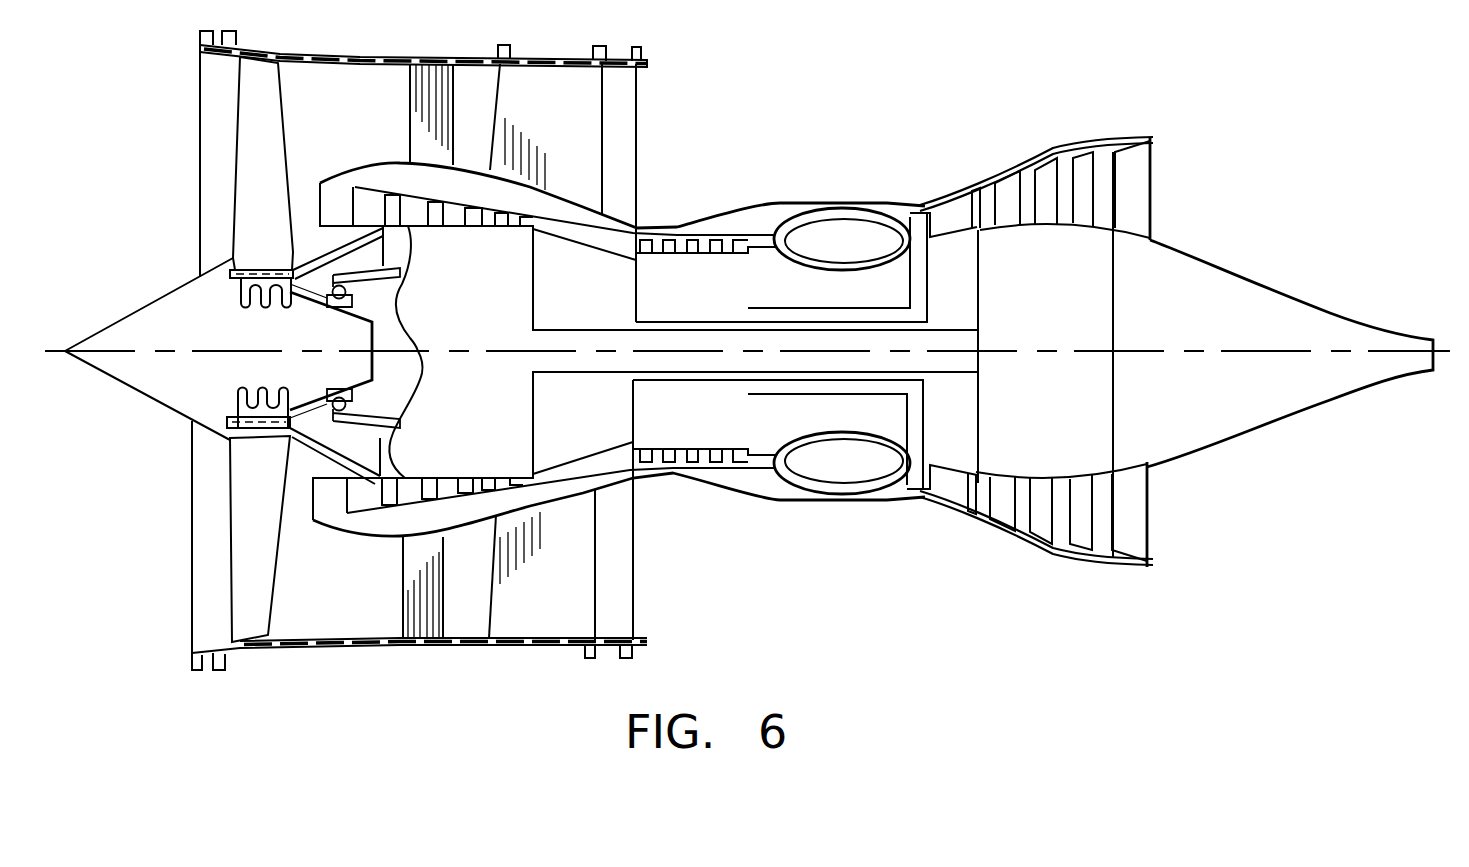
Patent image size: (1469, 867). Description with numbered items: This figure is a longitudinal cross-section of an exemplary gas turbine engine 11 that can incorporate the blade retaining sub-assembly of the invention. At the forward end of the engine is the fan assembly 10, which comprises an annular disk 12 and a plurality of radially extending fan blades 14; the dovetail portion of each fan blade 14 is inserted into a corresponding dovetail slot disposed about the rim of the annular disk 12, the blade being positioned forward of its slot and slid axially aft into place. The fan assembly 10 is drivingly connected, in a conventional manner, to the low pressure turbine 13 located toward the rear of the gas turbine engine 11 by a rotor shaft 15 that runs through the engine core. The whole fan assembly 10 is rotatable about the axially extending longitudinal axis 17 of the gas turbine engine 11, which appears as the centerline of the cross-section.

The fan assembly 10 is at (290, 92).
The gas turbine engine 11 is at (784, 186).
The annular disk 12 is at (238, 288).
The low pressure turbine 13 is at (999, 196).
The fan blade 14 is at (247, 125).
The rotor shaft 15 is at (978, 300).
The longitudinal axis 17 is at (1187, 353).